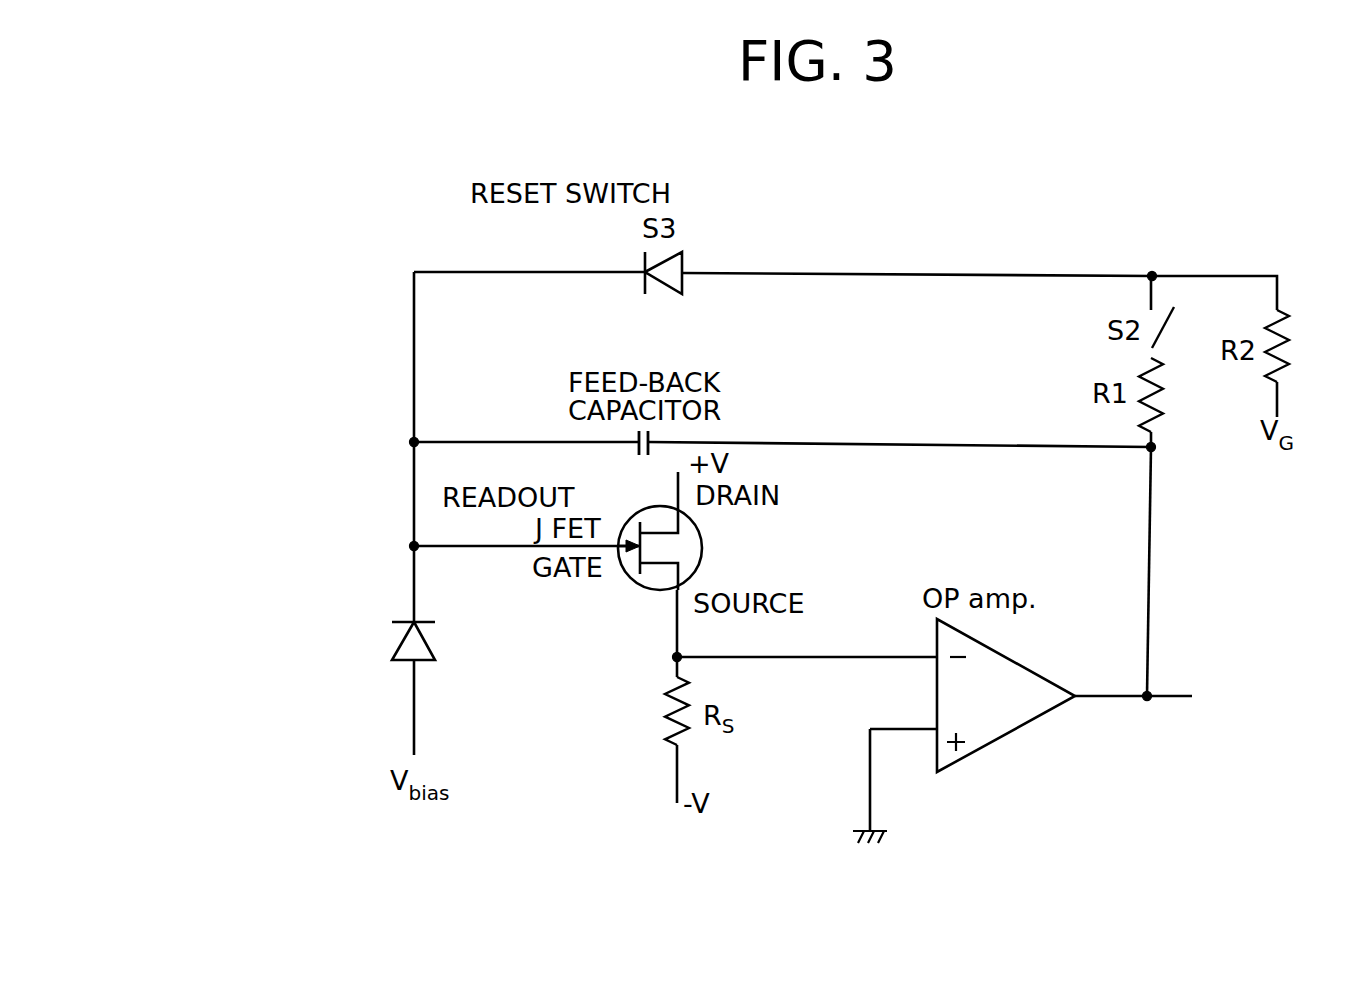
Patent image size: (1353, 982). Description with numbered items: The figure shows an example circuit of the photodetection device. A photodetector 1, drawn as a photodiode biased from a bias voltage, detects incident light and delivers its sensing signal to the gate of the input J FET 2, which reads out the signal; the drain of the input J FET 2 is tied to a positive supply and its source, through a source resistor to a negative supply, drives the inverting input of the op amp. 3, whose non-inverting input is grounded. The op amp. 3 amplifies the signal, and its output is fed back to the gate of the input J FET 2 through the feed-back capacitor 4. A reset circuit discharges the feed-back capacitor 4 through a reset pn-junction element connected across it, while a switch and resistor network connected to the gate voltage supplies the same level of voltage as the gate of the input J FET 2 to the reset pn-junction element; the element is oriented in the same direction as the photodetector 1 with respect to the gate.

The photodetector 1 is at (437, 640).
The input J FET 2 is at (702, 548).
The op amp. 3 is at (1042, 672).
The feed-back capacitor 4 is at (636, 449).